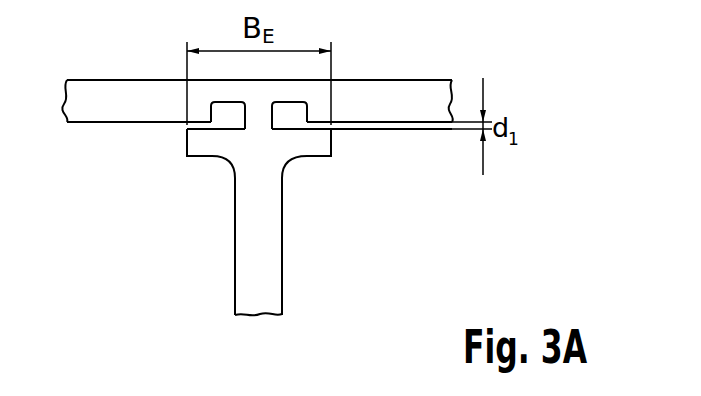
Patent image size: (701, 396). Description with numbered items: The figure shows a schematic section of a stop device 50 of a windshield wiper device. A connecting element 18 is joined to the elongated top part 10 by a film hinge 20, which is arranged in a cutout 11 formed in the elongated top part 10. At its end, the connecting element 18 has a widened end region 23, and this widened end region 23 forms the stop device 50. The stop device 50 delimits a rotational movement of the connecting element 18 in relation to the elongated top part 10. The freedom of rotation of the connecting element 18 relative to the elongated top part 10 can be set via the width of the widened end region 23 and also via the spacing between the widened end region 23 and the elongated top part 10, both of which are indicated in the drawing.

The elongated top part 10 is at (145, 103).
The cutout 11 is at (291, 117).
The connecting element 18 is at (267, 292).
The film hinge 20 is at (252, 112).
The widened end region 23 is at (340, 129).
The stop device 50 is at (360, 197).